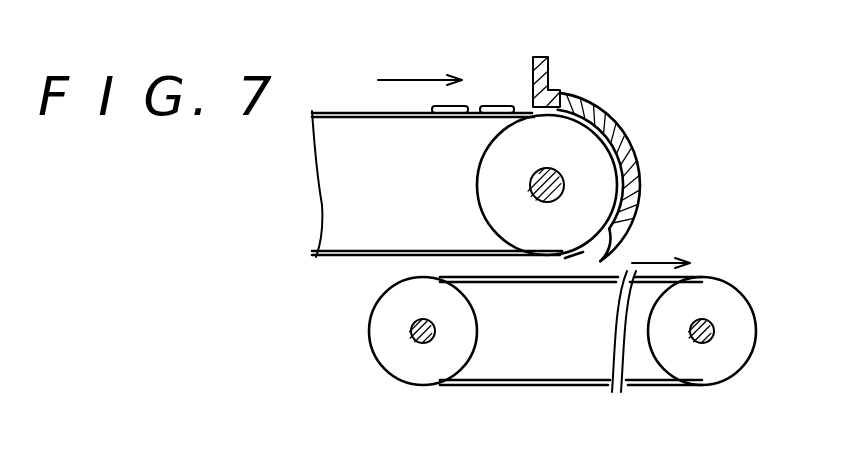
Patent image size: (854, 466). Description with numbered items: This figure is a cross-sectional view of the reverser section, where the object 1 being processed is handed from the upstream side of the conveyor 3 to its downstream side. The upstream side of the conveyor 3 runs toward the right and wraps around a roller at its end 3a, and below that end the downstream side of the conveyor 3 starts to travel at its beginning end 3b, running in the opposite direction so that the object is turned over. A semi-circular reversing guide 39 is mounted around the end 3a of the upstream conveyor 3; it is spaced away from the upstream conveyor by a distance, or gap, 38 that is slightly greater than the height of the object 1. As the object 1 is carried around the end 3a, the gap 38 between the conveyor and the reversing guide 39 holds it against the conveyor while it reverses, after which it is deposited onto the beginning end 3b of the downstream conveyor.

The object 1 is at (490, 106).
The conveyor 3 is at (350, 112).
The end of upstream conveyor 3a is at (522, 110).
The beginning end of downstream conveyor 3b is at (541, 386).
The distance (gap) 38 is at (607, 138).
The semi-circular reversing guide 39 is at (635, 165).